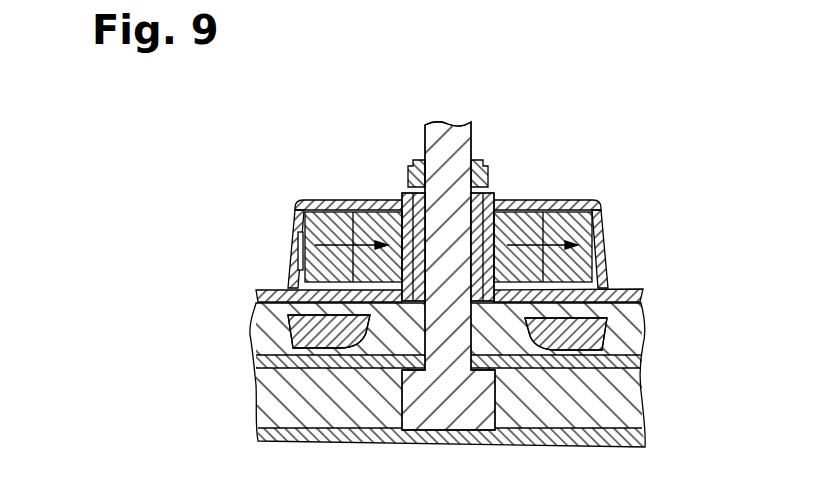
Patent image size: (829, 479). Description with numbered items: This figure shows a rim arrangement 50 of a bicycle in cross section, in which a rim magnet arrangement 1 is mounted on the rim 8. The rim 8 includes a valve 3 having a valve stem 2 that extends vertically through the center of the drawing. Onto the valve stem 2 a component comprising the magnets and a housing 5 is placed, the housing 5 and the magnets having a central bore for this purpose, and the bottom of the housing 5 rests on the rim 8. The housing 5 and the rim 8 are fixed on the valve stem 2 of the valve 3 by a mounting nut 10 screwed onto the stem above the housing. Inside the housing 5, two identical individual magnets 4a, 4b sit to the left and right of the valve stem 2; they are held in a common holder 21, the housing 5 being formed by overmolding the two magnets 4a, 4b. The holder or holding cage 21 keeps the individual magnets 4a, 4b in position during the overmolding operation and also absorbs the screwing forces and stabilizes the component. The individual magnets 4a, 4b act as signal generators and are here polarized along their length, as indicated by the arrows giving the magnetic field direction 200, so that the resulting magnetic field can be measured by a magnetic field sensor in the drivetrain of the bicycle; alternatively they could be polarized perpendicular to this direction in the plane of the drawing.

The rim magnet arrangement 1 is at (734, 248).
The valve stem 2 is at (450, 138).
The valve 3 is at (604, 106).
The individual magnet 4a is at (318, 202).
The individual magnet 4b is at (604, 227).
The housing 5 is at (606, 274).
The rim 8 is at (643, 322).
The mounting nut 10 is at (488, 173).
The holder 21 is at (279, 250).
The rim arrangement 50 is at (699, 114).
The magnetic field direction 200 is at (365, 203).